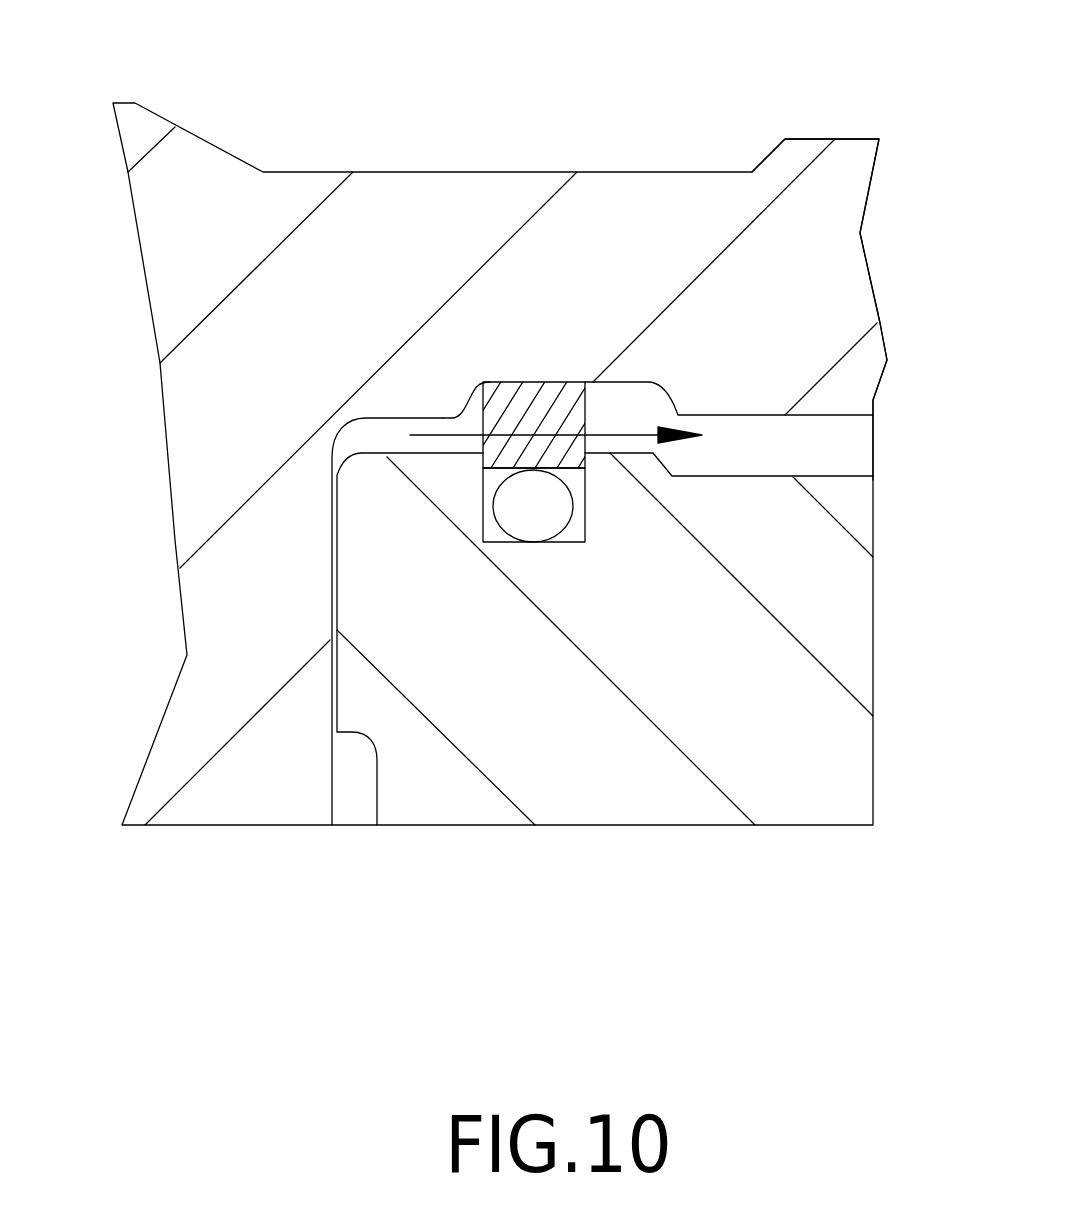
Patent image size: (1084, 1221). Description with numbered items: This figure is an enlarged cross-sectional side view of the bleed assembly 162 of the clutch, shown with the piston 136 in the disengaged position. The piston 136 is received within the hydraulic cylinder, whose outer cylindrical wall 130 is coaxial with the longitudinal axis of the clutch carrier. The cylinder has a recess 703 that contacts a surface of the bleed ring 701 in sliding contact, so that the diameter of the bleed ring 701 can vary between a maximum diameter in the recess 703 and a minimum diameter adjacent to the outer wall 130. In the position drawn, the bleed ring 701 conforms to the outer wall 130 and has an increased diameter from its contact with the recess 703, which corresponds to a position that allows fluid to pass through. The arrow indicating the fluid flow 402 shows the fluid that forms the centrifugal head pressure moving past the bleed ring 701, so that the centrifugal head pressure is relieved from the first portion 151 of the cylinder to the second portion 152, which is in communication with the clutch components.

The outer cylindrical wall 130 is at (773, 415).
The first portion 151 is at (355, 437).
The second portion 152 is at (717, 428).
The recess 703 is at (620, 382).
The fluid flow 402 is at (433, 437).
The bleed assembly 162 is at (527, 266).
The bleed ring 701 is at (567, 458).
The piston 136 is at (363, 552).